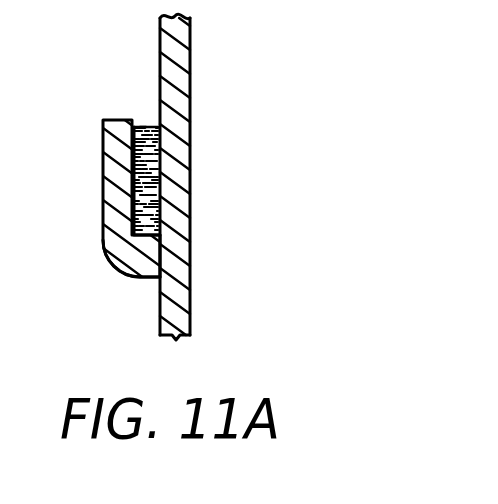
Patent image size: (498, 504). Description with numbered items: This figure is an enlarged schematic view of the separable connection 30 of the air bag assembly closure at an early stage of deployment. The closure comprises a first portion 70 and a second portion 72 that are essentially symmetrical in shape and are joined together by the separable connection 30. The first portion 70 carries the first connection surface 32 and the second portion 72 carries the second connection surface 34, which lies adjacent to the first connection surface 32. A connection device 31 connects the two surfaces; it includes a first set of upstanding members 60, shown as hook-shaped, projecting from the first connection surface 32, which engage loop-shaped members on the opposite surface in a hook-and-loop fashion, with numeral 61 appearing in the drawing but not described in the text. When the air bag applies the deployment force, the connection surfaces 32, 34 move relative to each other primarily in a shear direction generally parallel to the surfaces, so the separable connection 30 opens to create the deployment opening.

The first portion 70 is at (190, 70).
The second connection surface 34 is at (106, 193).
The second portion 72 is at (120, 268).
The first connection surface 32 is at (183, 215).
The first set of upstanding members 60 is at (150, 127).
The upper edge retainer 61 is at (143, 127).
The connection device 31 is at (150, 237).
The separable connection 30 is at (212, 248).